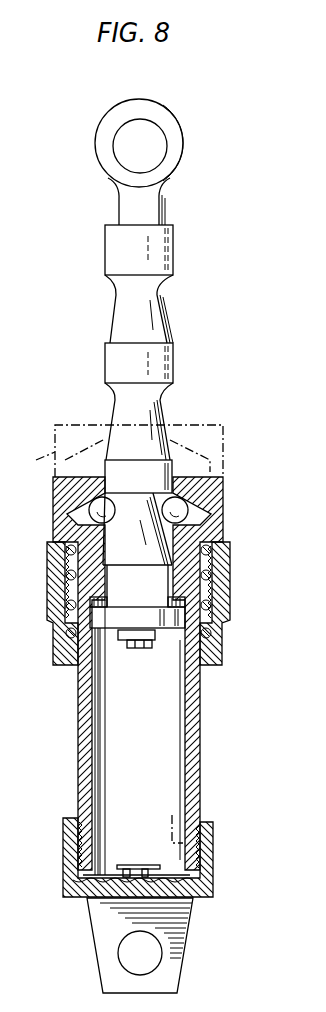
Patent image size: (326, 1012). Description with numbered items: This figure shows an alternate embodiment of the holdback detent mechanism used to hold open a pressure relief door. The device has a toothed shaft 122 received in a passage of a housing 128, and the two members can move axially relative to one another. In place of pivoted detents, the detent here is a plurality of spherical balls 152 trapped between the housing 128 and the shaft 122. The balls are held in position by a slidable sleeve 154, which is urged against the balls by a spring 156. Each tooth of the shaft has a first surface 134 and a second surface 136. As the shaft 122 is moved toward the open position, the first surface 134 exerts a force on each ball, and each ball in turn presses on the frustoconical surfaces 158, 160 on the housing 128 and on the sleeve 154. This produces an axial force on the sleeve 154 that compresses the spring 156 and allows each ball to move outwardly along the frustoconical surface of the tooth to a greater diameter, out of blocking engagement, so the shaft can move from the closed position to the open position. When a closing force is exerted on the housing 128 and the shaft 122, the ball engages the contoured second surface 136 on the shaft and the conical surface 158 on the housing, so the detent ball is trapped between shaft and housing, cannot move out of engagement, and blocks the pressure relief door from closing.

The shaft 122 is at (172, 279).
The second surface 136 is at (163, 390).
The first surface 134 is at (162, 418).
The spherical balls 152 is at (107, 497).
The slidable sleeve 154 is at (53, 503).
The frustoconical surface 160 is at (212, 497).
The frustoconical surface 158 is at (198, 507).
The spring 156 is at (210, 622).
The housing 128 is at (149, 731).